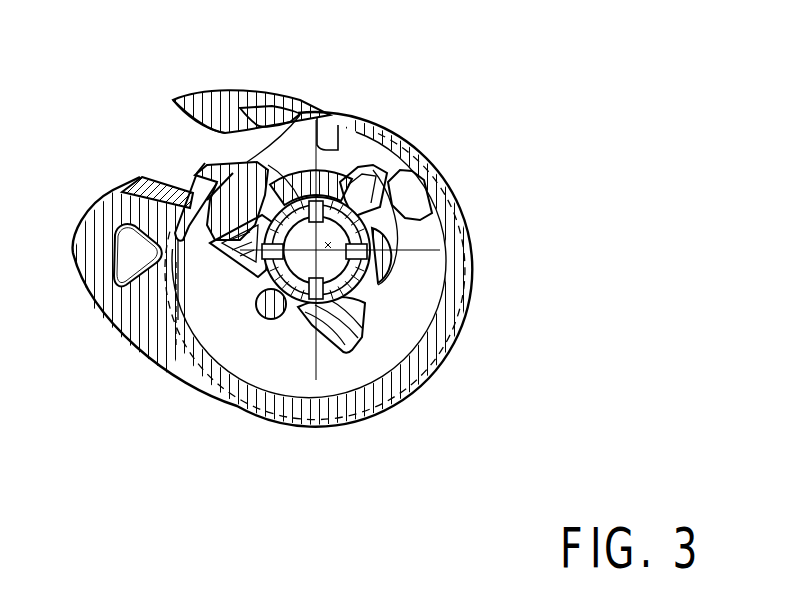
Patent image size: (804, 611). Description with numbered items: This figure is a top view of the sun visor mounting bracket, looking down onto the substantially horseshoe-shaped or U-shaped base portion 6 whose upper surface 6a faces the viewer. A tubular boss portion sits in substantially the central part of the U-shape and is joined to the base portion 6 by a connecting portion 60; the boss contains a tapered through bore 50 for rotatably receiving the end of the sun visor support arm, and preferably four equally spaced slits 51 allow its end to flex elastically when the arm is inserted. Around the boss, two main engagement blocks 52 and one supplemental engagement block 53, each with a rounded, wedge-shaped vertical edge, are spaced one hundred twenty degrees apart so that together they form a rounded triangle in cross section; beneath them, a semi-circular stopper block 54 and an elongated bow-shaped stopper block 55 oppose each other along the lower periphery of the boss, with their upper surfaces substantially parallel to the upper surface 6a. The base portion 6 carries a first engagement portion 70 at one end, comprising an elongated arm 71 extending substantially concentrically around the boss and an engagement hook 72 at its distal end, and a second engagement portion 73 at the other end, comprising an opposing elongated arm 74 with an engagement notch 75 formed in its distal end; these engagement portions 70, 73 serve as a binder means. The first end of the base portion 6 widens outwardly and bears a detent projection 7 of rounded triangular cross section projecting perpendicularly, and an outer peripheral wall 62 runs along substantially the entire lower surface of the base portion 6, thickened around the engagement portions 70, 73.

The base portion 6 is at (423, 440).
The upper surface of the base portion 6a is at (440, 400).
The detent projection 7 is at (113, 257).
The through bore 50 is at (405, 205).
The slits 51 is at (330, 110).
The main engagement blocks 52 is at (223, 285).
The supplemental engagement block 53 is at (373, 162).
The stopper block 54 is at (440, 205).
The stopper block 55 is at (268, 320).
The connecting portion 60 is at (357, 110).
The outer peripheral wall 62 is at (477, 263).
The first engagement portion 70 is at (193, 193).
The elongated arm 71 is at (120, 194).
The engagement hook 72 is at (212, 168).
The second engagement portion 73 is at (240, 67).
The elongated arm 74 is at (290, 107).
The engagement notch 75 is at (197, 107).